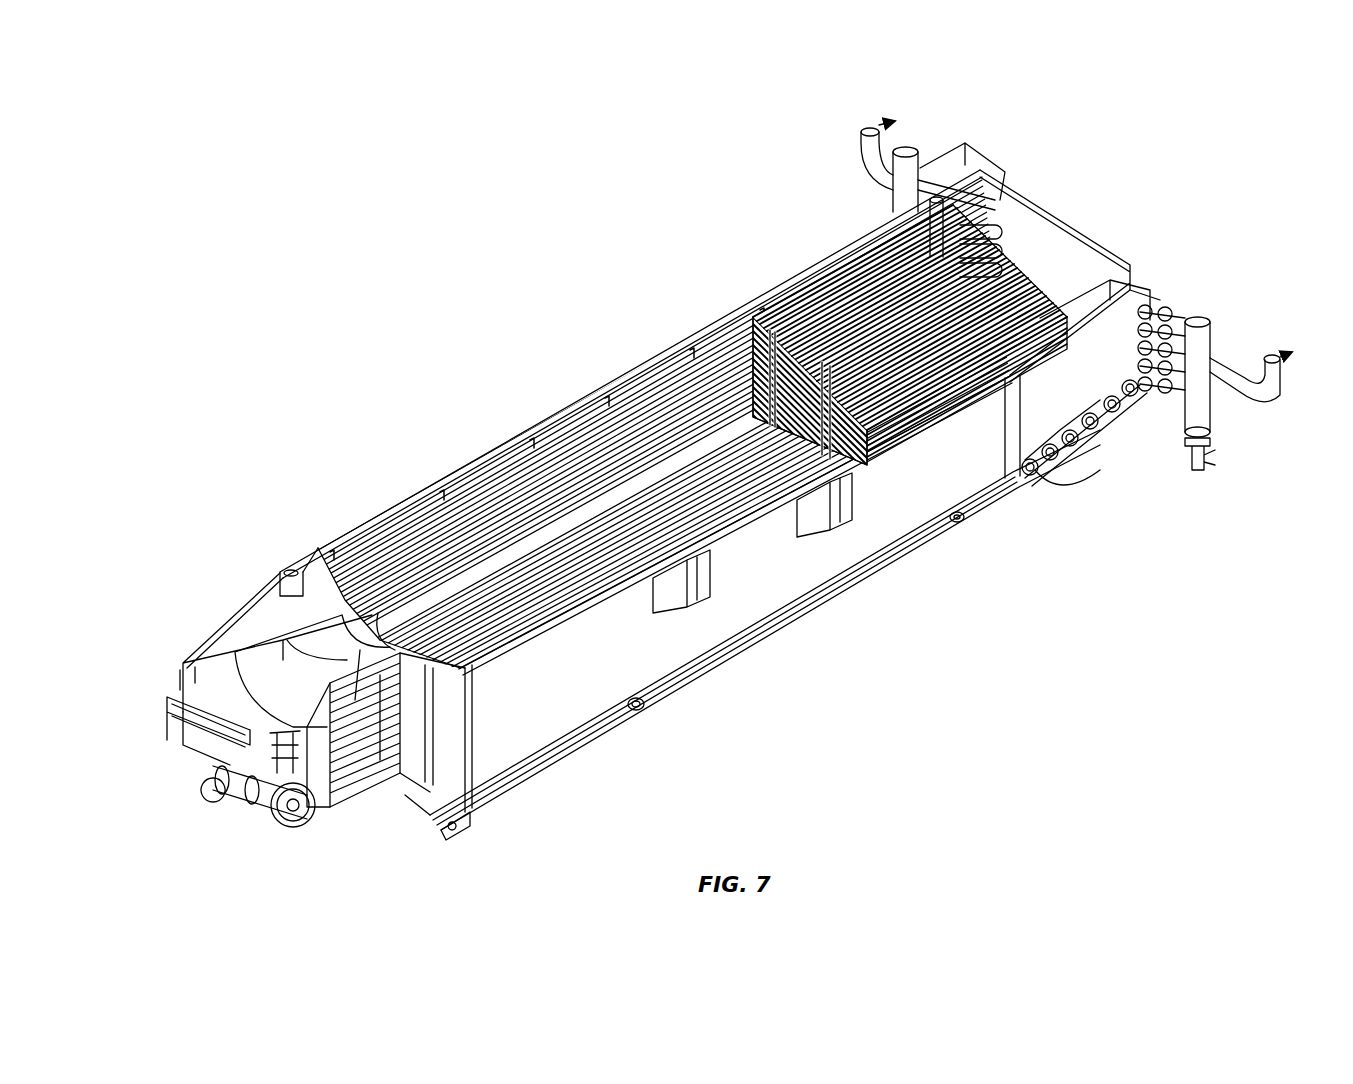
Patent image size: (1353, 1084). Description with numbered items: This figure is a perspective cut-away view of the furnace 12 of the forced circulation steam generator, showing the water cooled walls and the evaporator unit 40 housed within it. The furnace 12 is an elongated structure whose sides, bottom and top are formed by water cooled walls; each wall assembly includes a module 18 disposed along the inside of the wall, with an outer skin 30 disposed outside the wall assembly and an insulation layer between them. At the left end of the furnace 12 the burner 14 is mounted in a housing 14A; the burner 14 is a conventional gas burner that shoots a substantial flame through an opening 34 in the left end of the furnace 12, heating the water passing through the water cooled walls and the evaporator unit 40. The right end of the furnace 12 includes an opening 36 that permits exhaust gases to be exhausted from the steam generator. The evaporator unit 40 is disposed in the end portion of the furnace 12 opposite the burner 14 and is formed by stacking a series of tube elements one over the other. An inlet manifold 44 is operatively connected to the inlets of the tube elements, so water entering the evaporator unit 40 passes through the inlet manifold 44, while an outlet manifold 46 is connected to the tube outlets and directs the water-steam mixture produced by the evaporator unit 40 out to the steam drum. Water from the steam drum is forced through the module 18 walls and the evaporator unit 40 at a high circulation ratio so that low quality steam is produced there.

The furnace 12 is at (522, 309).
The burner 14 is at (192, 607).
The housing 14A is at (320, 786).
The module 18 is at (562, 450).
The outer skin 30 is at (888, 507).
The opening 34 is at (560, 655).
The opening 36 is at (1110, 211).
The evaporator unit 40 is at (1032, 275).
The inlet manifold 44 is at (905, 152).
The outlet manifold 46 is at (1200, 330).